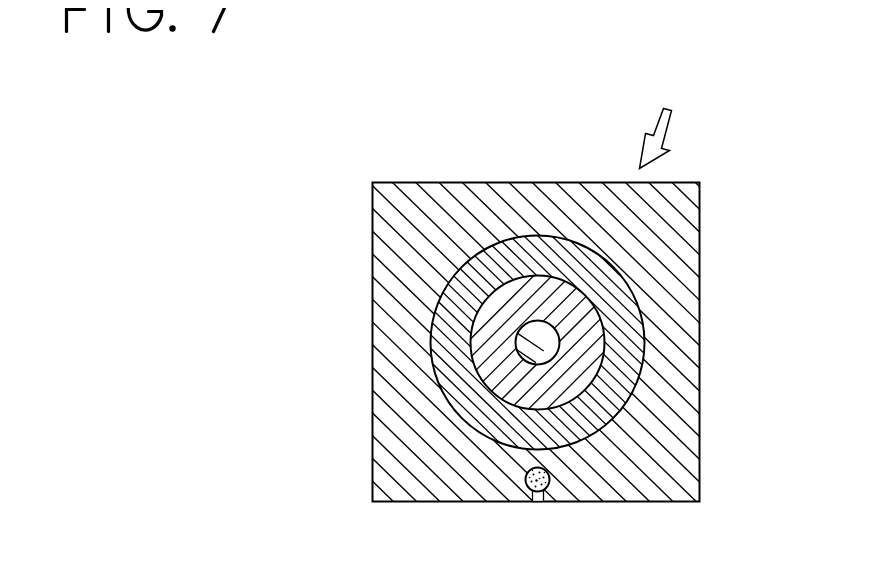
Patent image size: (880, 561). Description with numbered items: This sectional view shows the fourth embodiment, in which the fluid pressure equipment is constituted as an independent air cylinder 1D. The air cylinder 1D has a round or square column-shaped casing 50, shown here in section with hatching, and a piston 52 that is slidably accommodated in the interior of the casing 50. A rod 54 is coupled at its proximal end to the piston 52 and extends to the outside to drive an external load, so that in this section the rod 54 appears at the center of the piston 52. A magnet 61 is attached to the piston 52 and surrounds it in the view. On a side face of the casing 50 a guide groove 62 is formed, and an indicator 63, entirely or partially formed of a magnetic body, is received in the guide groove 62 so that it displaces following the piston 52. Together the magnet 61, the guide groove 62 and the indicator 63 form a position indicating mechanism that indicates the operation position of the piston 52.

The air cylinder 1D is at (669, 121).
The casing 50 is at (573, 210).
The piston 52 is at (500, 358).
The rod 54 is at (531, 337).
The magnet 61 is at (625, 348).
The guide groove 62 is at (510, 490).
The indicator 63 is at (555, 492).